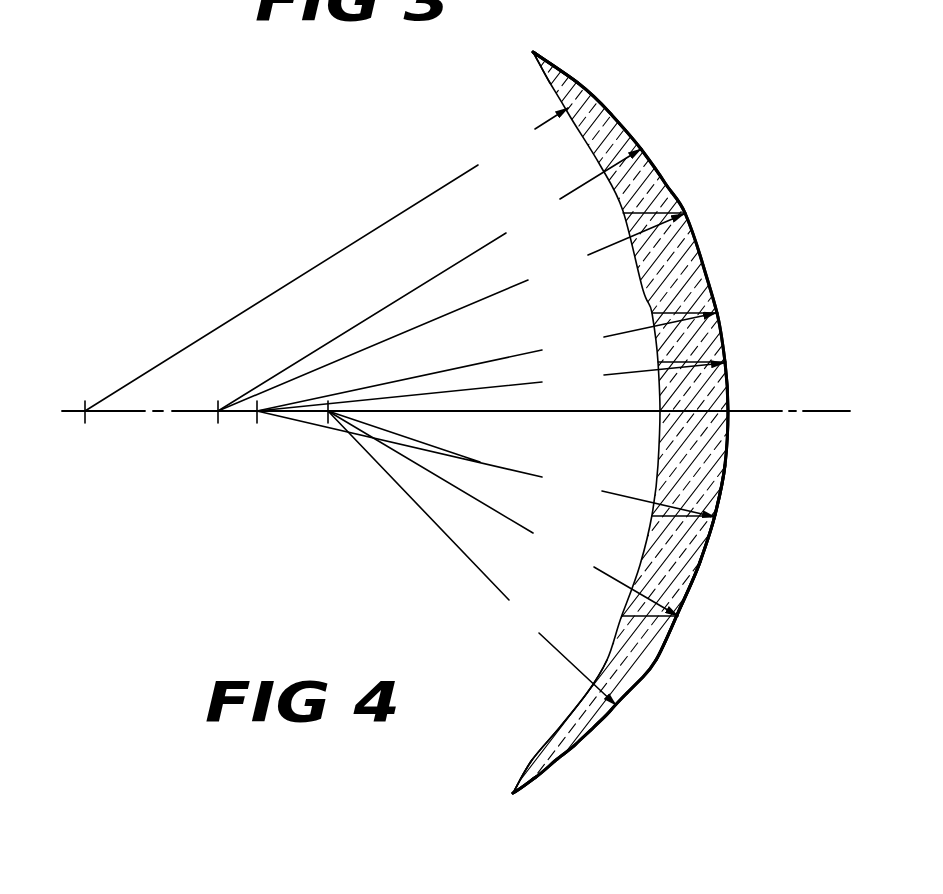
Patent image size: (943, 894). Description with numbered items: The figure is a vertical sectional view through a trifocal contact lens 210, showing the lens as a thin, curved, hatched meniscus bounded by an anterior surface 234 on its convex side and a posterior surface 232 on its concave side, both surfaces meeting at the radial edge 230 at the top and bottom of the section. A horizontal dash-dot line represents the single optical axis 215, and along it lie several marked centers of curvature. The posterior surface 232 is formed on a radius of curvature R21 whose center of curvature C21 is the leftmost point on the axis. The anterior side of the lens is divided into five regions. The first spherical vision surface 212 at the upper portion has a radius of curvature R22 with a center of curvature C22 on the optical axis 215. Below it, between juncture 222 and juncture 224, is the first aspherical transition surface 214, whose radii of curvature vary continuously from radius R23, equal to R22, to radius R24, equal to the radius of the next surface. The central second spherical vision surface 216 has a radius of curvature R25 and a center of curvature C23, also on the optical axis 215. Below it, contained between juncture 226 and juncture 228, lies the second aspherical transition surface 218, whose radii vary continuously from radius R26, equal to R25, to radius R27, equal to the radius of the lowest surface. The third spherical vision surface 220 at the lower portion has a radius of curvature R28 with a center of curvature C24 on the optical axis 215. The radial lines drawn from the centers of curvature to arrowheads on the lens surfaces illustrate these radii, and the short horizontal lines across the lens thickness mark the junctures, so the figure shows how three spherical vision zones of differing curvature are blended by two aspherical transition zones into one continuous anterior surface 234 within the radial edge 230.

The trifocal contact lens 210 is at (745, 58).
The first spherical vision surface 212 is at (614, 117).
The juncture 222 is at (685, 213).
The first aspherical transition surface 214 is at (705, 265).
The juncture 224 is at (718, 310).
The second spherical vision surface 216 is at (726, 383).
The juncture 226 is at (715, 516).
The second aspherical transition surface 218 is at (700, 562).
The juncture 228 is at (677, 616).
The third spherical vision surface 220 is at (627, 694).
The radial edge 230 is at (532, 52).
The posterior surface 232 is at (561, 726).
The anterior surface 234 is at (572, 760).
The single optical axis 215 is at (802, 412).
The center of curvature C21 is at (80, 418).
The center of curvature C22 is at (216, 418).
The center of curvature C23 is at (257, 418).
The center of curvature C24 is at (327, 418).
The radius of curvature R21 is at (326, 259).
The radius of curvature R22 is at (429, 280).
The radius R23 is at (451, 312).
The radius R24 is at (486, 362).
The radius of curvature R25 is at (490, 387).
The radius R26 is at (486, 464).
The radius R27 is at (503, 513).
The radius of curvature R28 is at (472, 558).